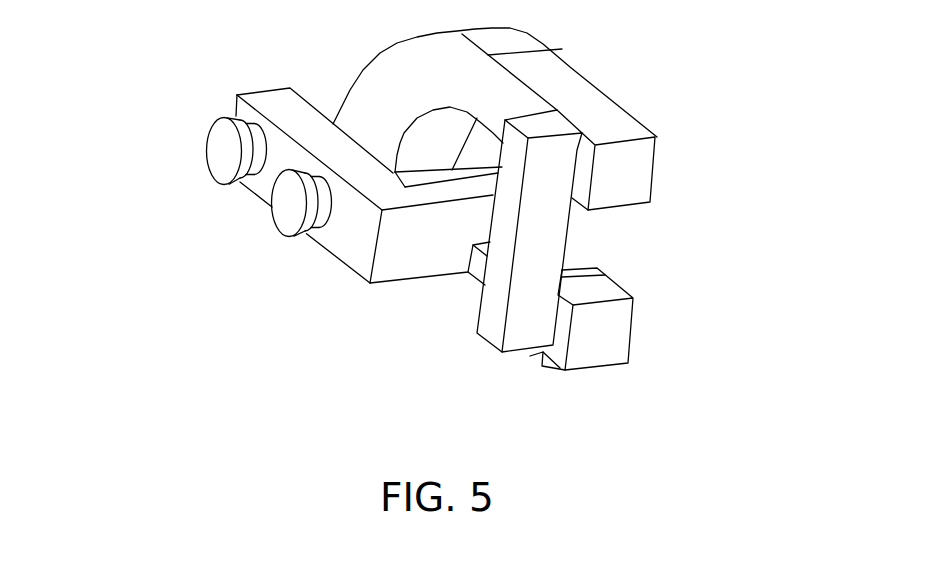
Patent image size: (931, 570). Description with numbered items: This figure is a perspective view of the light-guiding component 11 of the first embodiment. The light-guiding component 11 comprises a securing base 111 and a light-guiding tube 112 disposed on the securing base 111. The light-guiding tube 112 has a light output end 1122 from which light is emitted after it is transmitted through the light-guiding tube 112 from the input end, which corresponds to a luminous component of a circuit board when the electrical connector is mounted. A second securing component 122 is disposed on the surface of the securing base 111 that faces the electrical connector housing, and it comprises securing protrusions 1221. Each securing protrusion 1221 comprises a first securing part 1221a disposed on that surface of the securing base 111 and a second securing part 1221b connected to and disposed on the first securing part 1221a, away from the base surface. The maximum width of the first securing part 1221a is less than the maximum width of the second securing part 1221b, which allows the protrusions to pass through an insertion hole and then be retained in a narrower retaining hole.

The light-guiding component 11 is at (622, 408).
The securing base 111 is at (263, 92).
The light-guiding tube 112 is at (500, 43).
The light output end 1122 is at (633, 175).
The second securing component 122 is at (243, 199).
The securing protrusion 1221 is at (322, 204).
The first securing part 1221a is at (318, 175).
The second securing part 1221b is at (286, 234).